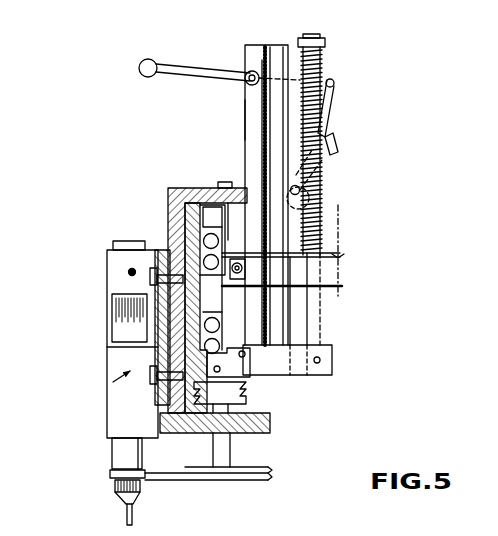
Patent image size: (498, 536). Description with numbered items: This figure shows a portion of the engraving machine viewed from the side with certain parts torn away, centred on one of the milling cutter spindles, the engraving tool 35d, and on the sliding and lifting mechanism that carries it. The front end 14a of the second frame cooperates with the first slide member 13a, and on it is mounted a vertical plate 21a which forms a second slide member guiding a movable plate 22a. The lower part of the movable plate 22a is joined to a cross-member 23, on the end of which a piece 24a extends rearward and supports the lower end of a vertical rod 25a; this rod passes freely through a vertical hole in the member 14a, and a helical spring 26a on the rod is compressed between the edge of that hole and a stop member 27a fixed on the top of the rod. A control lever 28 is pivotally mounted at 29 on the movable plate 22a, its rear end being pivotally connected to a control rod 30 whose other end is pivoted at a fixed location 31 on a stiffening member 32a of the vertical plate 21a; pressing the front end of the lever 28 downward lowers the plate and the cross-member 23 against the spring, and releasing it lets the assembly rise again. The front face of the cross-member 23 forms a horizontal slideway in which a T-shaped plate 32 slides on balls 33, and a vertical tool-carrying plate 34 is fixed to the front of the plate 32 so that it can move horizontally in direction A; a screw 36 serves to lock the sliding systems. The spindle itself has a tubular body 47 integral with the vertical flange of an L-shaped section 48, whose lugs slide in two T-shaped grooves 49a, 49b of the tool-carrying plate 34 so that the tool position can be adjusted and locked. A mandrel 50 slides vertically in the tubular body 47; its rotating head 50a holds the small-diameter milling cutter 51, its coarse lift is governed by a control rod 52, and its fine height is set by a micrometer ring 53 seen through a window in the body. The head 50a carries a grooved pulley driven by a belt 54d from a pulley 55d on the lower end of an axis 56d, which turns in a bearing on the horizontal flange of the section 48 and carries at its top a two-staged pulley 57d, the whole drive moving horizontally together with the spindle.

The first slide member 13a is at (338, 250).
The front end of the second frame 14a is at (300, 306).
The vertical plate 21a is at (258, 107).
The movable plate 22a is at (246, 127).
The cross-member 23 is at (240, 336).
The piece 24a is at (332, 361).
The vertical rod 25a is at (313, 299).
The helical spring 26a is at (326, 172).
The stop member 27a is at (326, 43).
The control lever 28 is at (200, 63).
The pivot 29 is at (249, 55).
The control rod 30 is at (335, 100).
The fixed location 31 is at (312, 206).
The T-shaped plate 32 is at (222, 338).
The stiffening member 32a is at (338, 143).
The balls 33 is at (222, 240).
The tool-carrying plate 34 is at (166, 193).
The engraving tool 35d is at (107, 381).
The screw 36 is at (232, 182).
The tubular body 47 is at (107, 352).
The L-shaped section 48 is at (185, 436).
The T-shaped groove 49a is at (164, 250).
The T-shaped groove 49b is at (155, 398).
The mandrel 50 is at (118, 453).
The rotating head 50a is at (113, 483).
The milling cutter 51 is at (126, 506).
The control rod 52 is at (128, 271).
The rotatively mounted ring 53 is at (112, 312).
The belt 54d is at (174, 480).
The pulley 55d is at (250, 479).
The axis 56d is at (222, 450).
The two-staged pulley 57d is at (248, 388).